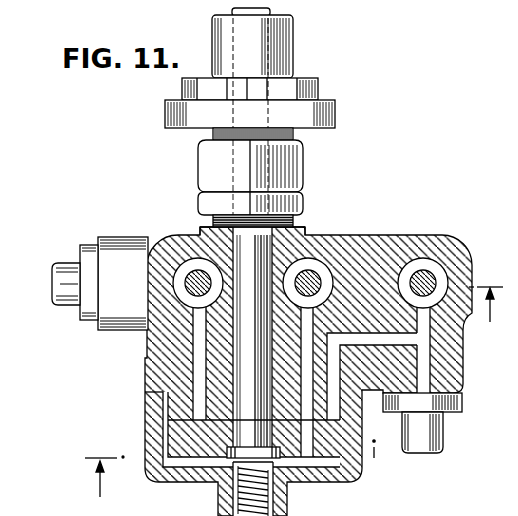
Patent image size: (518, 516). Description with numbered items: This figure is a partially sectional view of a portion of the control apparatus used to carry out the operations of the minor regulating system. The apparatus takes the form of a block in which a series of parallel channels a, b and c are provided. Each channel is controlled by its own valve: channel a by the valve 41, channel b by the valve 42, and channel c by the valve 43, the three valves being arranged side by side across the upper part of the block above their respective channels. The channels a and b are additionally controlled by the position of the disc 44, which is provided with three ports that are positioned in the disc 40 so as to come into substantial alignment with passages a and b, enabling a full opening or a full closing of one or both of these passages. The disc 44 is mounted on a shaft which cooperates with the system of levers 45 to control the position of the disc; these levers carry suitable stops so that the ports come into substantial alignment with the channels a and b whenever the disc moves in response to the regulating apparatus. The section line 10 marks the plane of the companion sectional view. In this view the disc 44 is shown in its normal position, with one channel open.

The section line 10 is at (294, 382).
The disc 40 is at (66, 292).
The valve 41 is at (196, 283).
The valve 42 is at (310, 283).
The valve 43 is at (427, 285).
The disc 44 is at (190, 445).
The system of levers 45 is at (306, 90).
The channel a is at (199, 346).
The channel b is at (307, 385).
The channel c is at (425, 352).